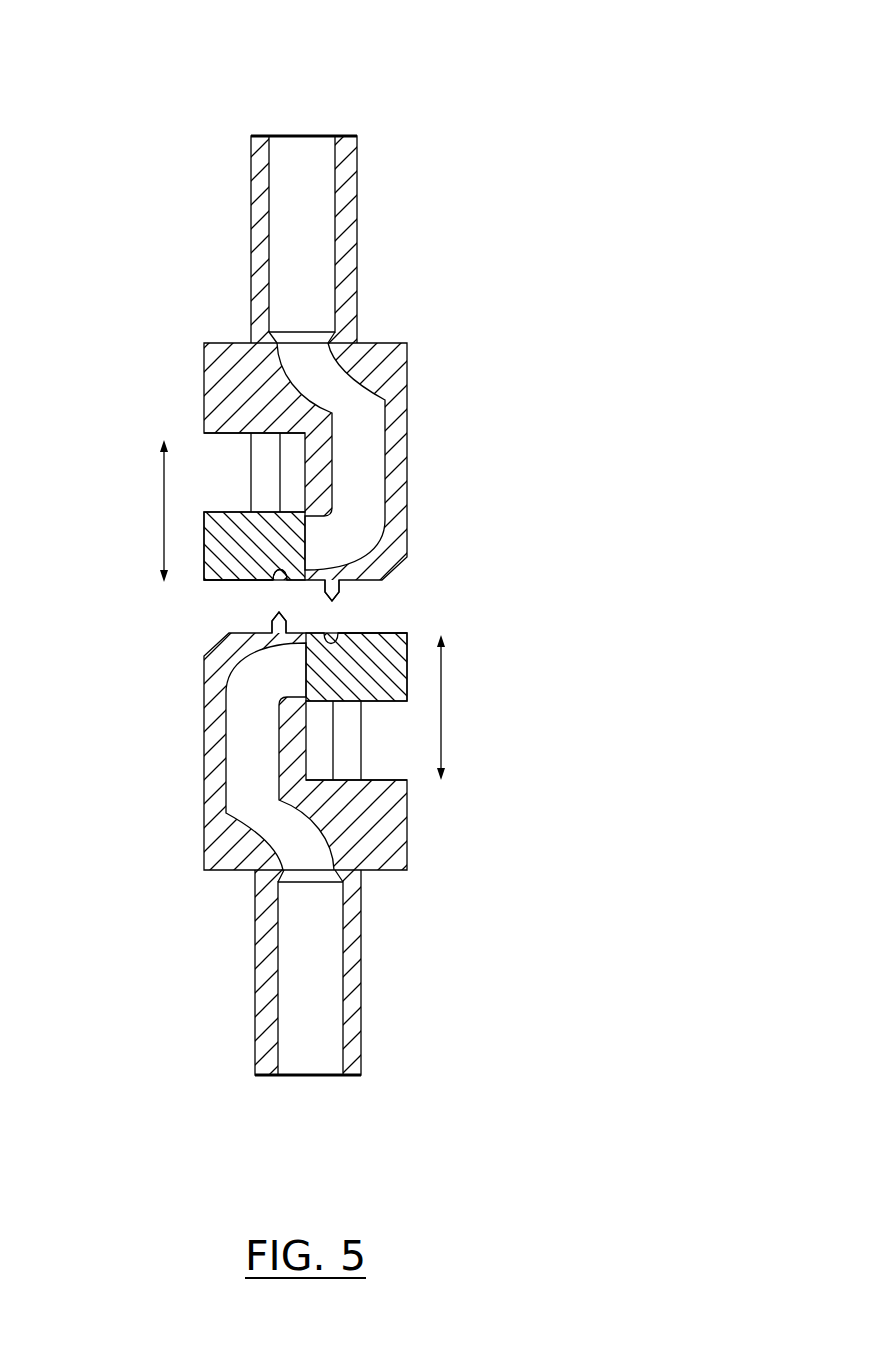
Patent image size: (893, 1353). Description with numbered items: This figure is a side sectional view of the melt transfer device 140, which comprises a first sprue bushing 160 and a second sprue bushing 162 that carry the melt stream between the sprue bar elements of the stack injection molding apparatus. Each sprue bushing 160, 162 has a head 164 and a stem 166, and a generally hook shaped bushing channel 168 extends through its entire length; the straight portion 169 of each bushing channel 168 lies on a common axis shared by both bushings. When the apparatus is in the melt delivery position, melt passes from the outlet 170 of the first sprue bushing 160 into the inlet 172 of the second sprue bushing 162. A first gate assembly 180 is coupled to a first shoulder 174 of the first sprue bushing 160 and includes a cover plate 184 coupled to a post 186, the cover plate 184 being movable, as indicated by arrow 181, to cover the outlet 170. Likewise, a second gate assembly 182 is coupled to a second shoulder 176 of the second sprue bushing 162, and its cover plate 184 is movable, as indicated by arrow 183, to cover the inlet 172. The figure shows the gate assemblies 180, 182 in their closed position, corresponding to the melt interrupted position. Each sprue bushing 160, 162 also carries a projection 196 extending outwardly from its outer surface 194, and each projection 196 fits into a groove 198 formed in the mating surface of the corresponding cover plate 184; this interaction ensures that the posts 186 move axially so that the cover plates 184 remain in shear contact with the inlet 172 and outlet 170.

The melt transfer device 140 is at (421, 106).
The first sprue bushing 160 is at (245, 185).
The second sprue bushing 162 is at (245, 994).
The head 164 is at (407, 408).
The stem 166 is at (346, 178).
The bushing channel 168 is at (306, 248).
The straight portion 169 is at (302, 148).
The outlet 170 is at (312, 540).
The inlet 172 is at (262, 690).
The first shoulder 174 is at (222, 435).
The second shoulder 176 is at (407, 778).
The first gate assembly 180 is at (185, 592).
The arrow 181 is at (162, 466).
The second gate assembly 182 is at (430, 625).
The arrow 183 is at (441, 730).
The cover plate 184 is at (228, 541).
The post 186 is at (265, 473).
The outer surface 194 is at (272, 622).
The projection 196 is at (283, 614).
The groove 198 is at (278, 584).